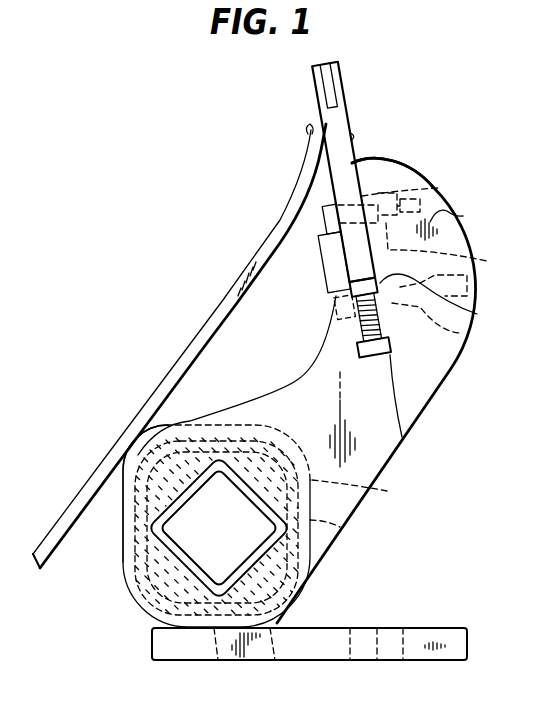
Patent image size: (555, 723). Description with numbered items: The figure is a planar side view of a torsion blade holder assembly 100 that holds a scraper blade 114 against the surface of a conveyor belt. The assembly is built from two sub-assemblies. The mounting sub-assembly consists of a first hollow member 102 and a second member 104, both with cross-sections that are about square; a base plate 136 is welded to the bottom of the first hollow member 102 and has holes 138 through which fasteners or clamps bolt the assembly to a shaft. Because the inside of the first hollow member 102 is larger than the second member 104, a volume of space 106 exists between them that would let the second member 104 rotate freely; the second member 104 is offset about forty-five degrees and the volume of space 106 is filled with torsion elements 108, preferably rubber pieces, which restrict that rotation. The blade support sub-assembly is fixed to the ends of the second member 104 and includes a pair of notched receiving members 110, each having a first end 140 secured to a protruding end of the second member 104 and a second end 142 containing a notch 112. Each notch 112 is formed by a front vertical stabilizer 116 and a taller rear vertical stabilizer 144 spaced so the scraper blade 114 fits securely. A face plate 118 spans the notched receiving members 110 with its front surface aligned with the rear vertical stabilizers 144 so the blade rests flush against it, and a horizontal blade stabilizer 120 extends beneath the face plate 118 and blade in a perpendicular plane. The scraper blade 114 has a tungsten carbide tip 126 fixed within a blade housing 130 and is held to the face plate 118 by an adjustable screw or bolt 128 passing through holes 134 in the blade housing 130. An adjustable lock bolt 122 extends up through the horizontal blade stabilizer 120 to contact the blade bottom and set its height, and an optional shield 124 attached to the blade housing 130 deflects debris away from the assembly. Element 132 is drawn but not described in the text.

The torsion blade holder assembly 100 is at (200, 104).
The first hollow member 102 is at (340, 527).
The second member 104 is at (125, 600).
The volume of space 106 is at (218, 448).
The torsion elements 108 is at (120, 440).
The notched receiving members 110 is at (426, 375).
The notch 112 is at (337, 292).
The scraper blade 114 is at (355, 139).
The front vertical stabilizer 116 is at (331, 263).
The face plate 118 is at (488, 261).
The horizontal blade stabilizer 120 is at (467, 339).
The adjustable lock bolt 122 is at (402, 437).
The shield 124 is at (224, 300).
The tungsten carbide tip 126 is at (320, 65).
The screw or bolt 128 is at (441, 185).
The blade housing 130 is at (346, 117).
The lip 132 is at (307, 131).
The holes 134 is at (421, 167).
The base plate 136 is at (331, 650).
The holes 138 is at (378, 662).
The first end 140 is at (123, 493).
The second end 142 is at (463, 216).
The rear vertical stabilizer 144 is at (477, 317).